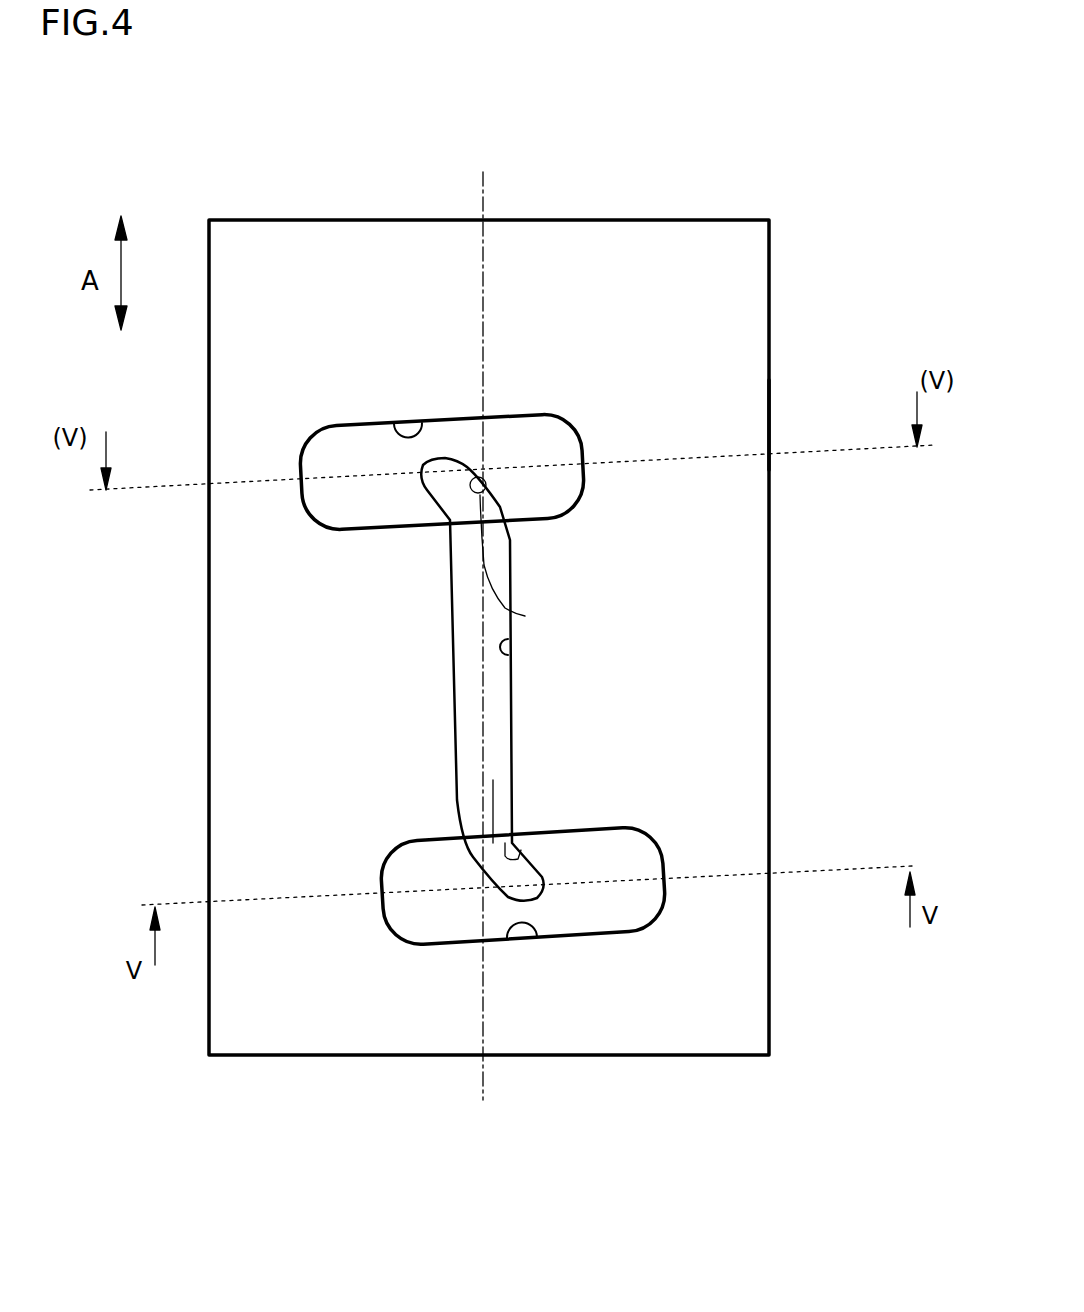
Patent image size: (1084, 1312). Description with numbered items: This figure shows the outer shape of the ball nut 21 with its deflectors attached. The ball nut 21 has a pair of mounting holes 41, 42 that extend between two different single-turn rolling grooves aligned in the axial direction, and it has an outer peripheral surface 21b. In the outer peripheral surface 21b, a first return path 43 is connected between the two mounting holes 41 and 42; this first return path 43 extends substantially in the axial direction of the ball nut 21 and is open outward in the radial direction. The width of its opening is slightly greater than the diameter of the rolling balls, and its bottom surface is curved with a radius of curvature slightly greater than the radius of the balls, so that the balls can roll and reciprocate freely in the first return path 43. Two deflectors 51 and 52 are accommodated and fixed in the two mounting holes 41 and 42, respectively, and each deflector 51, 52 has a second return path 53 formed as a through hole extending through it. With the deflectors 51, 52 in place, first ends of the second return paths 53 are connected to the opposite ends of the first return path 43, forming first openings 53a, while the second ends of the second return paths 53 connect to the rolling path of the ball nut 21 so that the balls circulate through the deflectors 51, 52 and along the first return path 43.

The ball nut 21 is at (226, 751).
The outer peripheral surface 21b is at (770, 425).
The mounting hole 41 is at (537, 937).
The mounting hole 42 is at (390, 423).
The first return path 43 is at (510, 637).
The deflector 51 is at (595, 912).
The deflector 52 is at (462, 422).
The second return path 53 is at (487, 487).
The first opening 53a is at (525, 616).